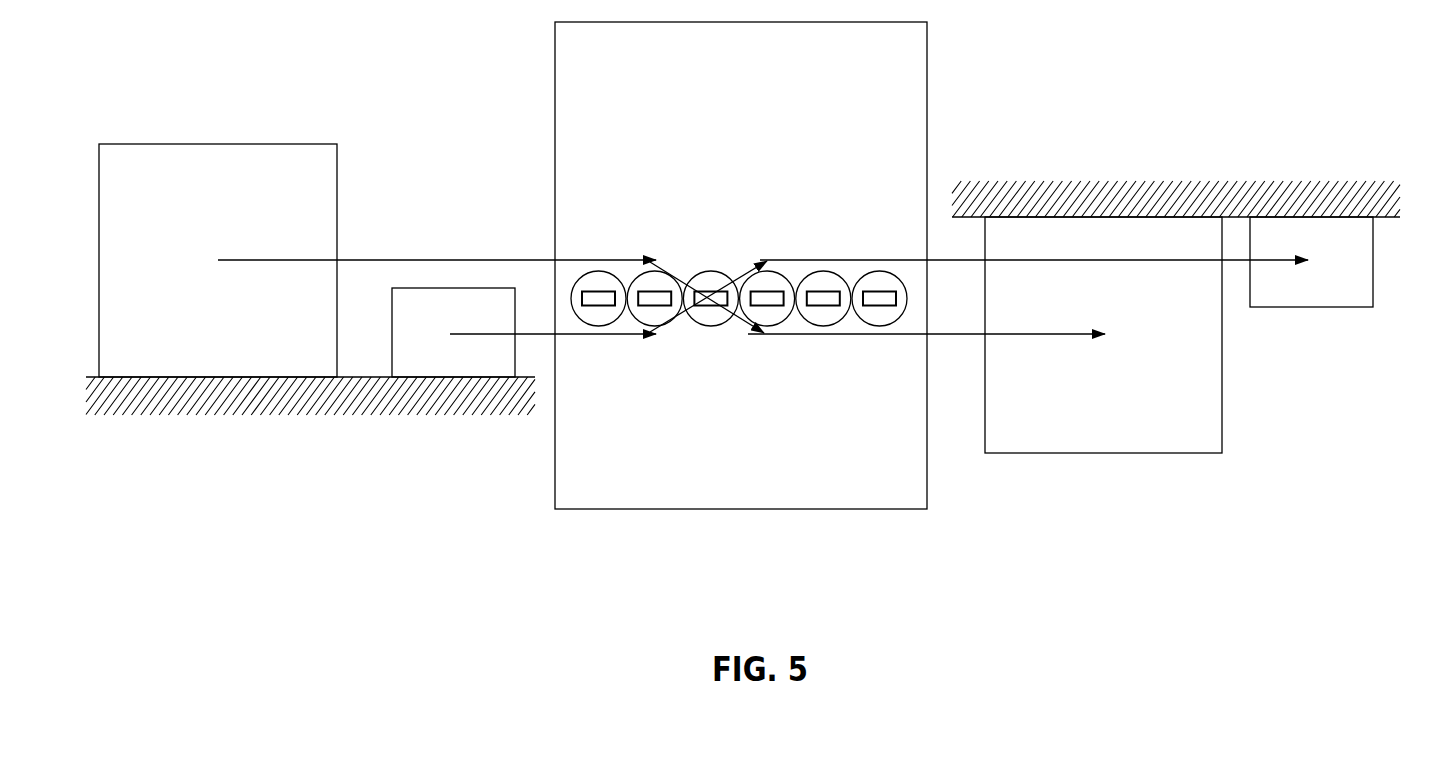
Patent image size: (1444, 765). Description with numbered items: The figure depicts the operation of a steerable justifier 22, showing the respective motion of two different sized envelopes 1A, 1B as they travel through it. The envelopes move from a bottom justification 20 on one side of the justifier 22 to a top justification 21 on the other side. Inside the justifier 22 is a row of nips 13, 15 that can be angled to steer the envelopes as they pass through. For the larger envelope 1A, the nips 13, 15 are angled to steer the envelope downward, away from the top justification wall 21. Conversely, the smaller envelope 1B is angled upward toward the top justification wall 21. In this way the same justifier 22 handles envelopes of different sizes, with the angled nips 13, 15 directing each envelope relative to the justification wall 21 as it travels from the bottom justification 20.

The larger envelope 1A is at (244, 142).
The smaller envelope 1B is at (392, 345).
The nip 13 is at (739, 374).
The nip 15 is at (720, 378).
The bottom justification 20 is at (317, 405).
The top justification wall 21 is at (1182, 195).
The justifier 22 is at (927, 103).